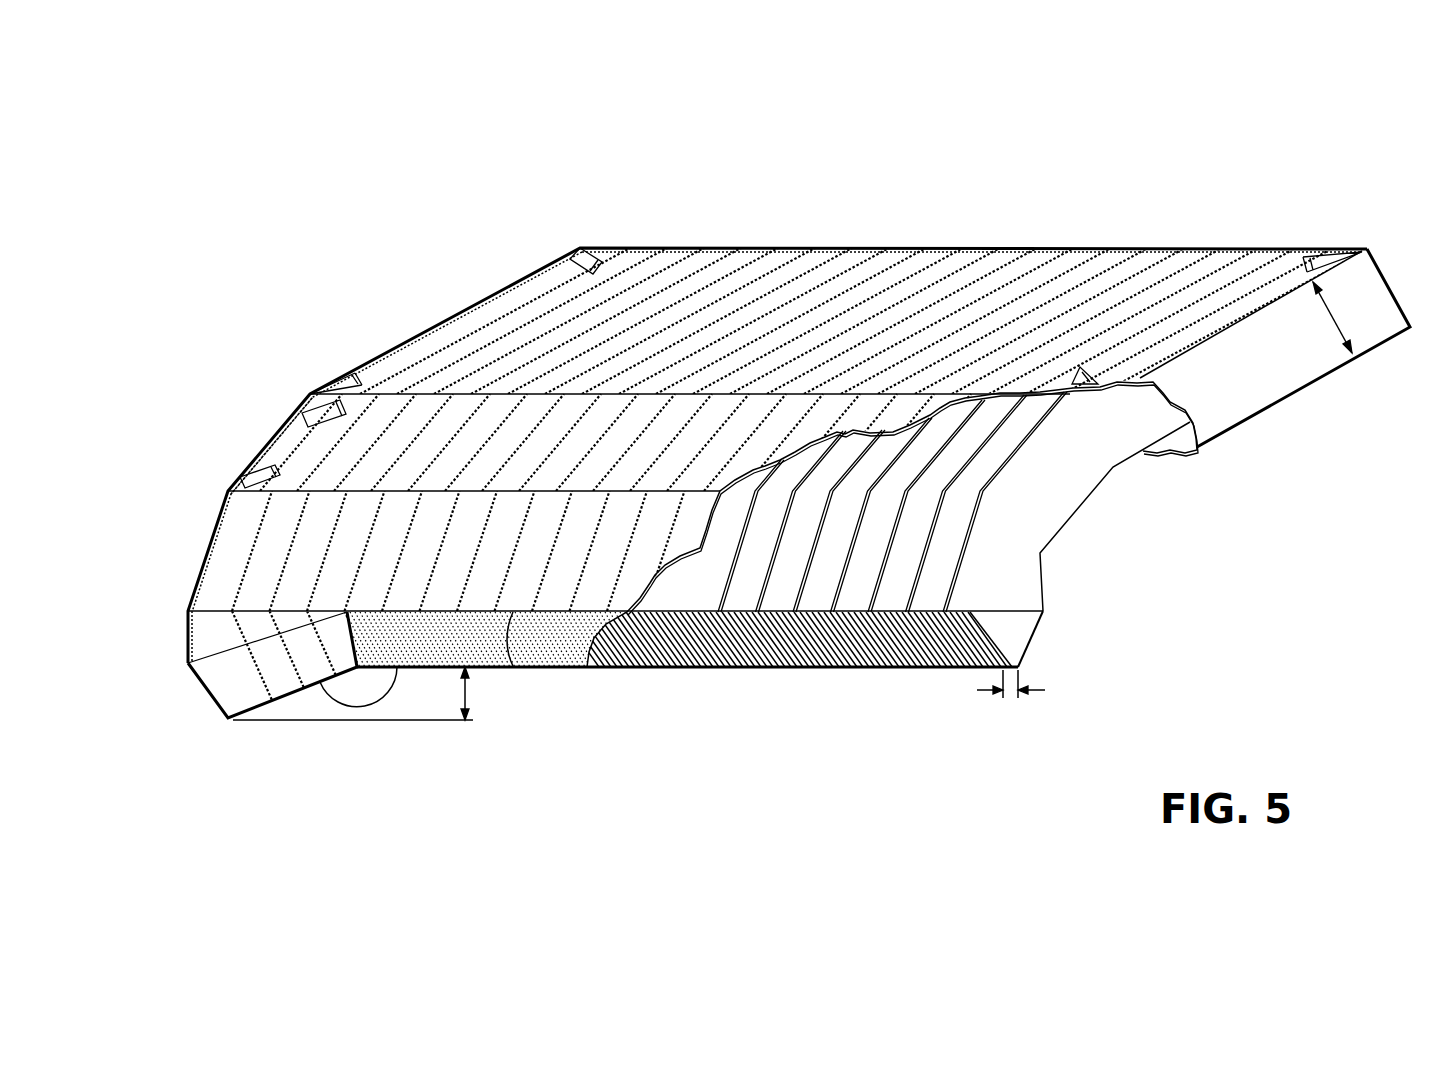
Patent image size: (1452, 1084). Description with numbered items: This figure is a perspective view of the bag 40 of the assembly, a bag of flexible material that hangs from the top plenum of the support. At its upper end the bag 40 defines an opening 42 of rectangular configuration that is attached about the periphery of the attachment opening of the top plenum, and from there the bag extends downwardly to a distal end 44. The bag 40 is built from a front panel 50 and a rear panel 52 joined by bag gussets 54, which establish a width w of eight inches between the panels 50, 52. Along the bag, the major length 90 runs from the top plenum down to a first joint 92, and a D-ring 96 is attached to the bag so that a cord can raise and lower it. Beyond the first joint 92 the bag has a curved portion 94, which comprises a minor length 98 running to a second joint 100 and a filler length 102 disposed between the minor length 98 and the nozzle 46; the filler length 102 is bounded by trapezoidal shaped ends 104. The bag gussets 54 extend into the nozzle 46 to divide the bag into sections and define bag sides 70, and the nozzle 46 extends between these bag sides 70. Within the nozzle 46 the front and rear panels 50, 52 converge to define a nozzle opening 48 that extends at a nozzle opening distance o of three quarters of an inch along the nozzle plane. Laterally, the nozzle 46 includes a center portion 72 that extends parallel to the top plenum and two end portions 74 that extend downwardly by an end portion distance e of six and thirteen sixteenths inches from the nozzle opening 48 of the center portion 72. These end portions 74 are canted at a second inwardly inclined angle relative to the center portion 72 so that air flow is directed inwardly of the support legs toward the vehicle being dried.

The bag 40 is at (455, 311).
The opening 42 is at (1355, 262).
The distal end 44 is at (520, 667).
The nozzle 46 is at (1023, 630).
The nozzle opening 48 is at (1012, 665).
The front panel 50 is at (1287, 290).
The rear panel 52 is at (1273, 407).
The bag gussets 54 is at (567, 670).
The bag sides 70 is at (370, 358).
The center portion 72 is at (738, 656).
The end portions 74 is at (283, 700).
The major length 90 is at (532, 285).
The first joint 92 is at (418, 396).
The curved portion 94 is at (222, 485).
The D-ring 96 is at (287, 460).
The minor length 98 is at (302, 438).
The second joint 100 is at (258, 493).
The filler length 102 is at (220, 578).
The trapezoidal shaped ends 104 is at (210, 612).
The width w is at (1350, 345).
The end portion distance e is at (467, 698).
The nozzle opening distance o is at (1038, 692).